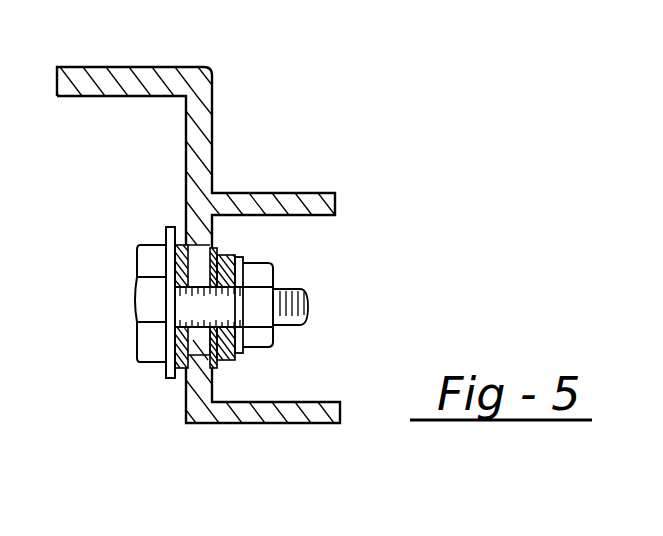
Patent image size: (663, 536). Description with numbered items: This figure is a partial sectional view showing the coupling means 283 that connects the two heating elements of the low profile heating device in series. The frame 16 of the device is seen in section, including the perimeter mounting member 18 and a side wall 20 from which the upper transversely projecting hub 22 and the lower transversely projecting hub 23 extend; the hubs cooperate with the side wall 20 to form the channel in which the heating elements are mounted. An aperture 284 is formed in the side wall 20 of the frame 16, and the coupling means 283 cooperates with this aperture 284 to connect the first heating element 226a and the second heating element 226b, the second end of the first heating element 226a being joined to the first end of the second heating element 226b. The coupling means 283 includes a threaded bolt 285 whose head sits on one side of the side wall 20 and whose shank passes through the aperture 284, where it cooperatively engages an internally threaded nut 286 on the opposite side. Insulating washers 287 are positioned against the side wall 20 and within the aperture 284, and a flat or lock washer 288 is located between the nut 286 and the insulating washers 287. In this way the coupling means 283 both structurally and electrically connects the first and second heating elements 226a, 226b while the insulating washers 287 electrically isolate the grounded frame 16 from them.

The frame 16 is at (199, 241).
The perimeter mounting member 18 is at (104, 82).
The side wall 20 is at (200, 132).
The upper transversely projecting hub 22 is at (292, 200).
The lower transversely projecting hub 23 is at (253, 410).
The coupling means 283 is at (229, 284).
The aperture 284 is at (200, 262).
The threaded bolt 285 is at (143, 297).
The internally threaded nut 286 is at (262, 337).
The insulating washers 287 is at (172, 381).
The flat or lock washer 288 is at (247, 353).
The first heating element 226a is at (228, 362).
The second heating element 226b is at (220, 253).